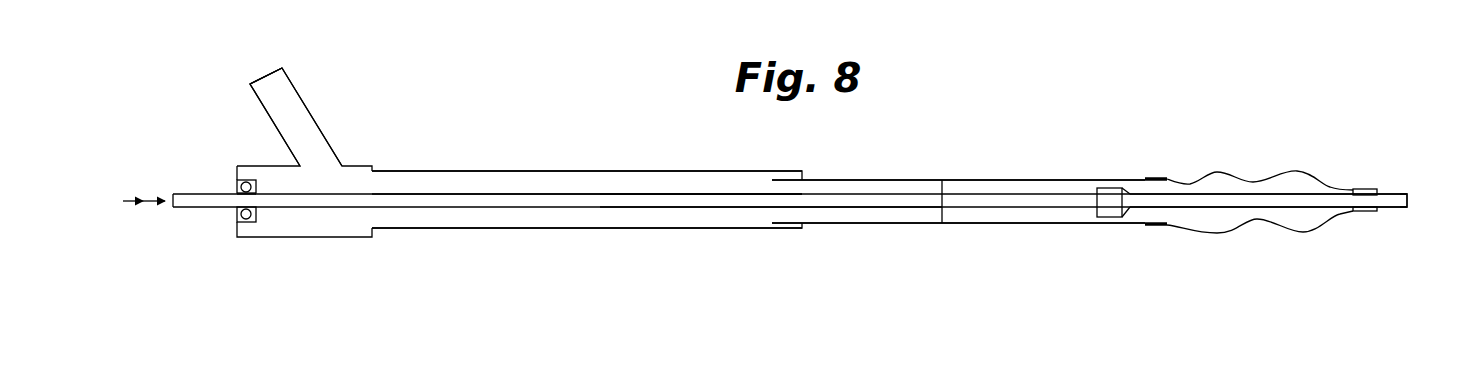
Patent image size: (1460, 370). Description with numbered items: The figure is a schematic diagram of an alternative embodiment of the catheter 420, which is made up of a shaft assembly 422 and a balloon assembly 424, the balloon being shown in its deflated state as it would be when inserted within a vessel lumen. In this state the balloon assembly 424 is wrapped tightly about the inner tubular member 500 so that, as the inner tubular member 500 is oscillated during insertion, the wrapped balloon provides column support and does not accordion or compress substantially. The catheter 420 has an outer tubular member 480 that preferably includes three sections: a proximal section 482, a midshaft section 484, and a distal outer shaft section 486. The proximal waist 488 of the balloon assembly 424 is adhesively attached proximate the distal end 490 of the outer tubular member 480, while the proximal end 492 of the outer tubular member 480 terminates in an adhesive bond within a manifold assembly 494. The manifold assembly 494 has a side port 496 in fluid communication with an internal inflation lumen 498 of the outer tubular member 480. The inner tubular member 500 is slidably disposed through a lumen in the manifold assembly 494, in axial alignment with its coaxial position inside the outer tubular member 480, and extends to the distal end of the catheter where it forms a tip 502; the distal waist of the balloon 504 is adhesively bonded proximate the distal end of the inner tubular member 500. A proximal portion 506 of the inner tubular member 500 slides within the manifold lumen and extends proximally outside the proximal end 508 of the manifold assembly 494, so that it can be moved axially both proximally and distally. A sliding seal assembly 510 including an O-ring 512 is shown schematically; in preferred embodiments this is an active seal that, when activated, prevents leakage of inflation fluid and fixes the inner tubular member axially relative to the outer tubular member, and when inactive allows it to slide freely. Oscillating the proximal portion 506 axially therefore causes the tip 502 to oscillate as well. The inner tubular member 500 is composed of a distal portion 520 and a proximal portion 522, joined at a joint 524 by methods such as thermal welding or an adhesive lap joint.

The catheter 420 is at (526, 165).
The shaft assembly 422 is at (497, 232).
The balloon assembly 424 is at (1247, 177).
The outer tubular member 480 is at (884, 163).
The proximal section 482 is at (712, 172).
The midshaft section 484 is at (925, 180).
The distal outer shaft section 486 is at (1033, 180).
The proximal waist 488 is at (1162, 227).
The distal end 490 is at (1158, 178).
The proximal end 492 is at (392, 170).
The manifold assembly 494 is at (316, 145).
The side port 496 is at (275, 85).
The internal inflation lumen 498 is at (562, 218).
The inner tubular member 500 is at (876, 211).
The tip 502 is at (1397, 195).
The distal waist of the balloon 504 is at (1367, 212).
The proximal portion 506 is at (220, 200).
The proximal end 508 is at (235, 179).
The sliding seal assembly 510 is at (231, 176).
The O-ring 512 is at (235, 190).
The distal portion 520 is at (1330, 190).
The proximal portion 522 is at (680, 202).
The joint 524 is at (1115, 218).